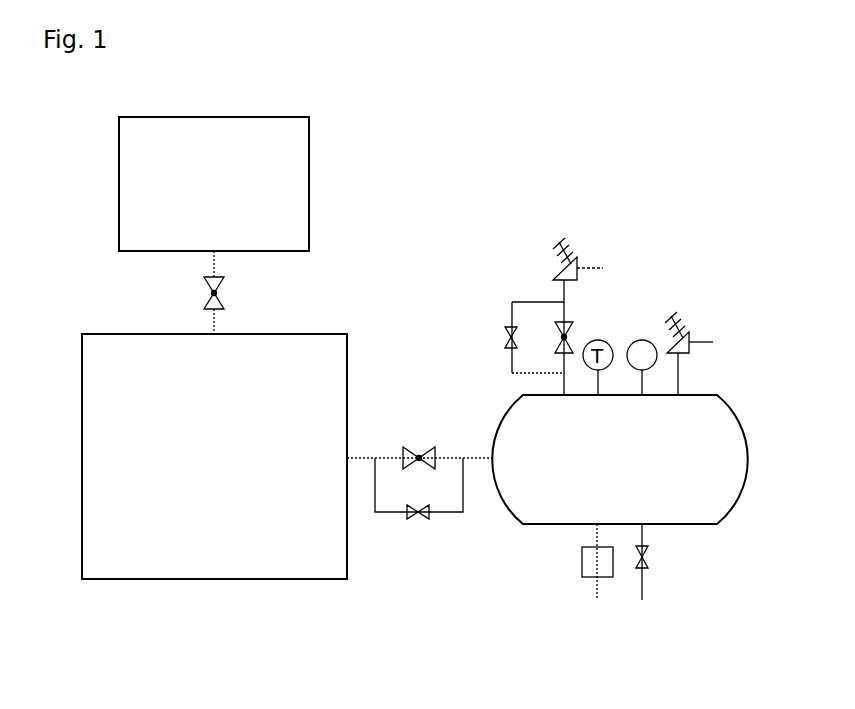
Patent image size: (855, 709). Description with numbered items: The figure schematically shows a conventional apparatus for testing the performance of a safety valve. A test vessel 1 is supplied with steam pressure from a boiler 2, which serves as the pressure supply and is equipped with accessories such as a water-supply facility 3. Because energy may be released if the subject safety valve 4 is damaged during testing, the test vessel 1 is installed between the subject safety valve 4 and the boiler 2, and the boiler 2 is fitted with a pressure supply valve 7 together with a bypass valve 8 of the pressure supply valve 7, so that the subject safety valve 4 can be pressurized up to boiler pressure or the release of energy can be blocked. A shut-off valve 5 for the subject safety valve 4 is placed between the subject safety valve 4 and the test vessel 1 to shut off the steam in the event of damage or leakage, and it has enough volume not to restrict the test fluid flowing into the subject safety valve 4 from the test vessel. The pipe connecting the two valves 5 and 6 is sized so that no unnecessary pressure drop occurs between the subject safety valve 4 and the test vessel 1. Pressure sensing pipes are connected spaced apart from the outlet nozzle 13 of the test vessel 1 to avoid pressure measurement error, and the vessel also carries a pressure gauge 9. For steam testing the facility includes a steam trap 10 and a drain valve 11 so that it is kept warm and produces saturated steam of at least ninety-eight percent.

The test vessel 1 is at (535, 527).
The boiler 2 is at (347, 355).
The water-supply facility 3 is at (310, 185).
The subject safety valve 4 is at (577, 250).
The shut-off valve 5 is at (572, 335).
The valve 6 is at (505, 337).
The pressure supply valve 7 is at (418, 453).
The bypass valve 8 is at (418, 518).
The pressure gauge 9 is at (643, 338).
The steam trap 10 is at (588, 577).
The drain valve 11 is at (648, 557).
The outlet nozzle 13 is at (554, 389).